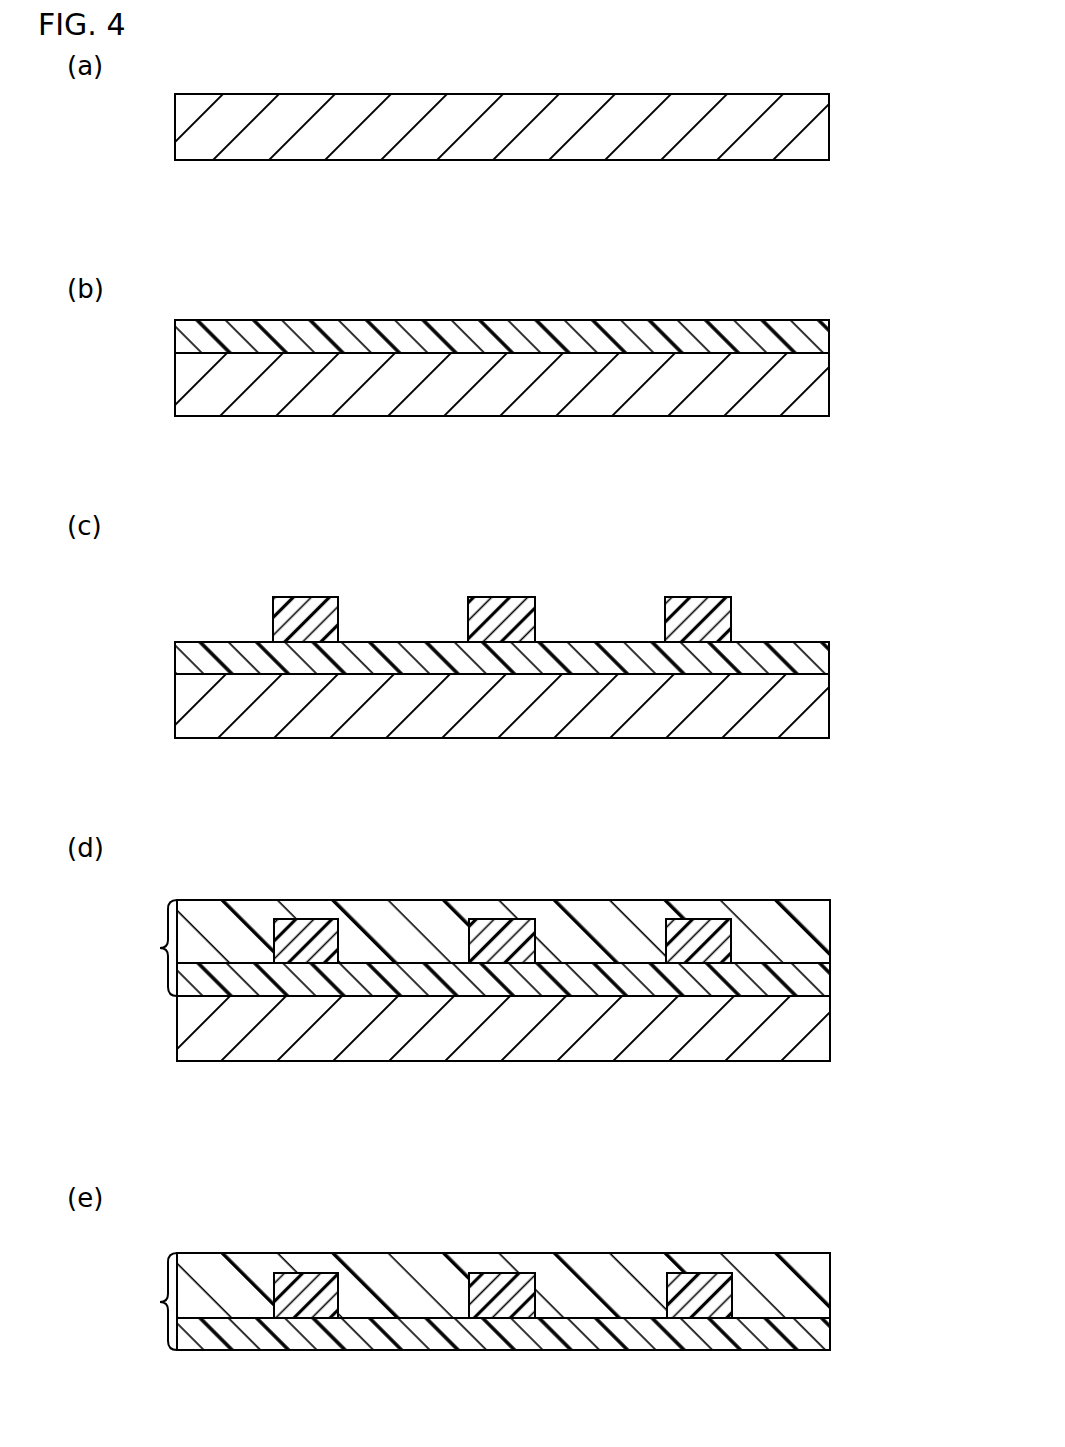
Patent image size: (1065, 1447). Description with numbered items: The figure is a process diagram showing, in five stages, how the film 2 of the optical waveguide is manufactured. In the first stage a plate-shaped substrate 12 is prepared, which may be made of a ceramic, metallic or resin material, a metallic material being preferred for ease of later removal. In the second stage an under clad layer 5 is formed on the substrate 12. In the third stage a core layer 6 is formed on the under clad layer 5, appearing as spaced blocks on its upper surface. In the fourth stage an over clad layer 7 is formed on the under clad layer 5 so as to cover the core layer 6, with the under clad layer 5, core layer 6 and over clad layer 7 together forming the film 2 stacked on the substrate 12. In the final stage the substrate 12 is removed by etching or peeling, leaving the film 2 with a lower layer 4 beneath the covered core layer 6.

The substrate 12 is at (829, 123).
The under clad layer 5 is at (829, 327).
The core layer 6 is at (306, 597).
The over clad layer 7 is at (830, 920).
The base layer 4 is at (830, 1327).
The film 2 is at (150, 1125).